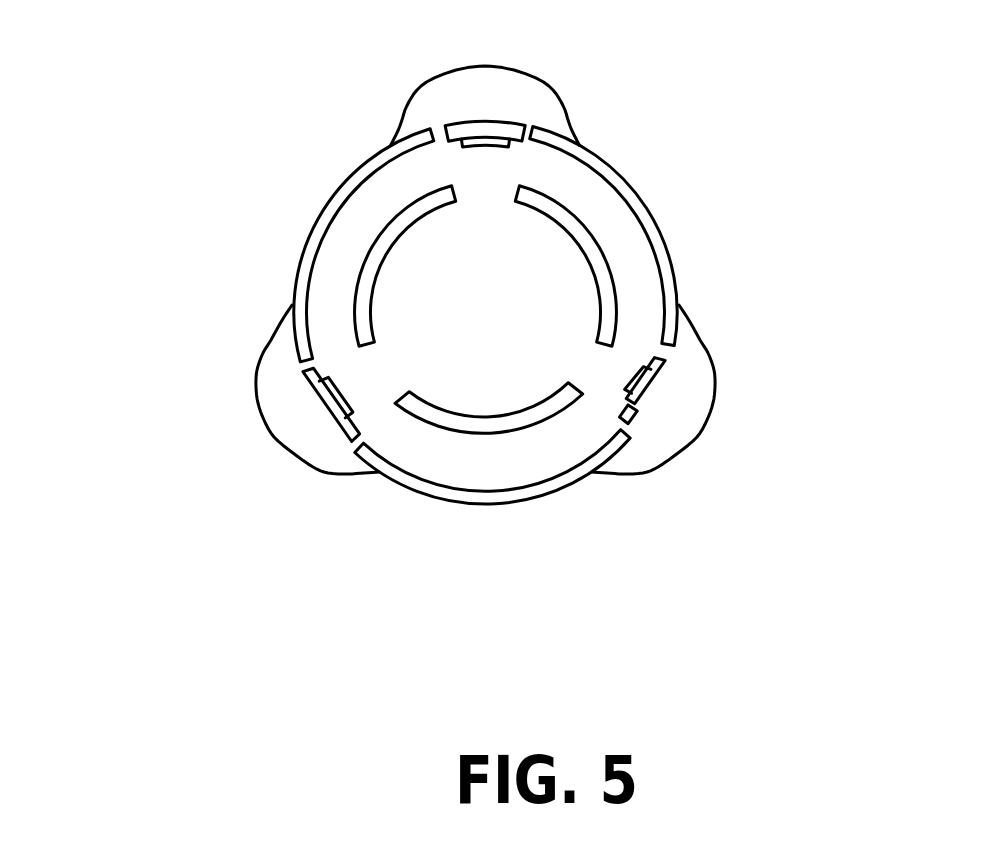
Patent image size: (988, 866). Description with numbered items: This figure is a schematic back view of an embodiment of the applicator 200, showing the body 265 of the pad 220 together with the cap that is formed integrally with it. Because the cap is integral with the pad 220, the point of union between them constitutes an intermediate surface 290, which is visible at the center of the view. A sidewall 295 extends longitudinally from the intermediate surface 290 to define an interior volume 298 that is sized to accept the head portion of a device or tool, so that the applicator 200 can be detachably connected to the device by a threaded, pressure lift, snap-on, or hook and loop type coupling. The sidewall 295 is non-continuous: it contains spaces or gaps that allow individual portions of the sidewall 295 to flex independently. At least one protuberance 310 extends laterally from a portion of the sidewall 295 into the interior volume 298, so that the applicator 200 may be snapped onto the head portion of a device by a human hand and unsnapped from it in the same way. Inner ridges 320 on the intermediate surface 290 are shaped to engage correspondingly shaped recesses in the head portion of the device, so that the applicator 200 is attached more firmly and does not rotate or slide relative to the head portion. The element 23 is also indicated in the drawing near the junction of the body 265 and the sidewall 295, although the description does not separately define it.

The applicator 200 is at (712, 159).
The housing 23 is at (571, 127).
The pad 220 is at (692, 262).
The body 265 is at (714, 444).
The intermediate surface 290 is at (378, 200).
The sidewall 295 is at (655, 386).
The interior volume 298 is at (348, 219).
The protuberance 310 is at (636, 380).
The inner ridges 320 is at (367, 295).